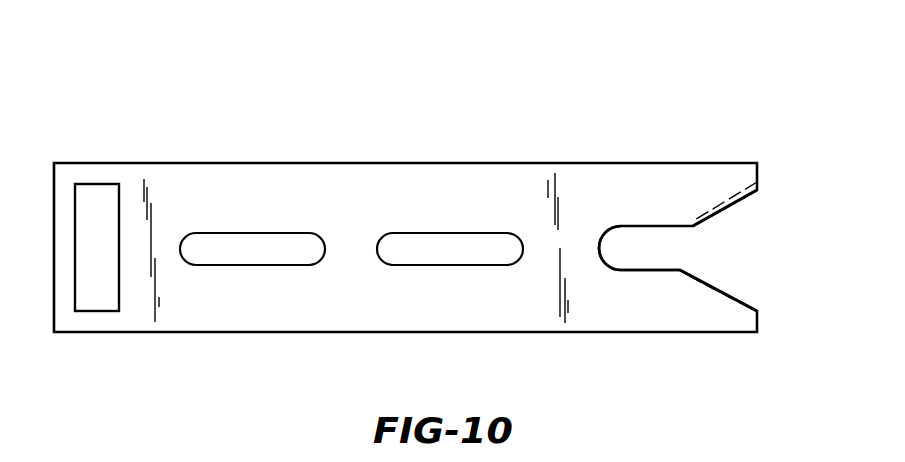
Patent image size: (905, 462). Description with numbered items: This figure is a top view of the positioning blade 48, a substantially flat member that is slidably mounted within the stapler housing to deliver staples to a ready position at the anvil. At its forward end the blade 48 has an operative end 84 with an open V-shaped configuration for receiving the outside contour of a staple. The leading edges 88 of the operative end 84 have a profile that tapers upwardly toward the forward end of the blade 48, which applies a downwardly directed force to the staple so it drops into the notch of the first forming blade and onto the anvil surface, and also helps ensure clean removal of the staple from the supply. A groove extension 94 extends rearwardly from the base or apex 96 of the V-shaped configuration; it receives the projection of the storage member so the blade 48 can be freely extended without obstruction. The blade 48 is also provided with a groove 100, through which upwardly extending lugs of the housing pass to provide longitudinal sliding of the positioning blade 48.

The positioning blade 48 is at (378, 123).
The operative end 84 is at (780, 175).
The leading edges 88 is at (737, 203).
The groove extension 94 is at (619, 243).
The apex of the V-shaped configuration 96 is at (703, 243).
The groove 100 is at (394, 255).